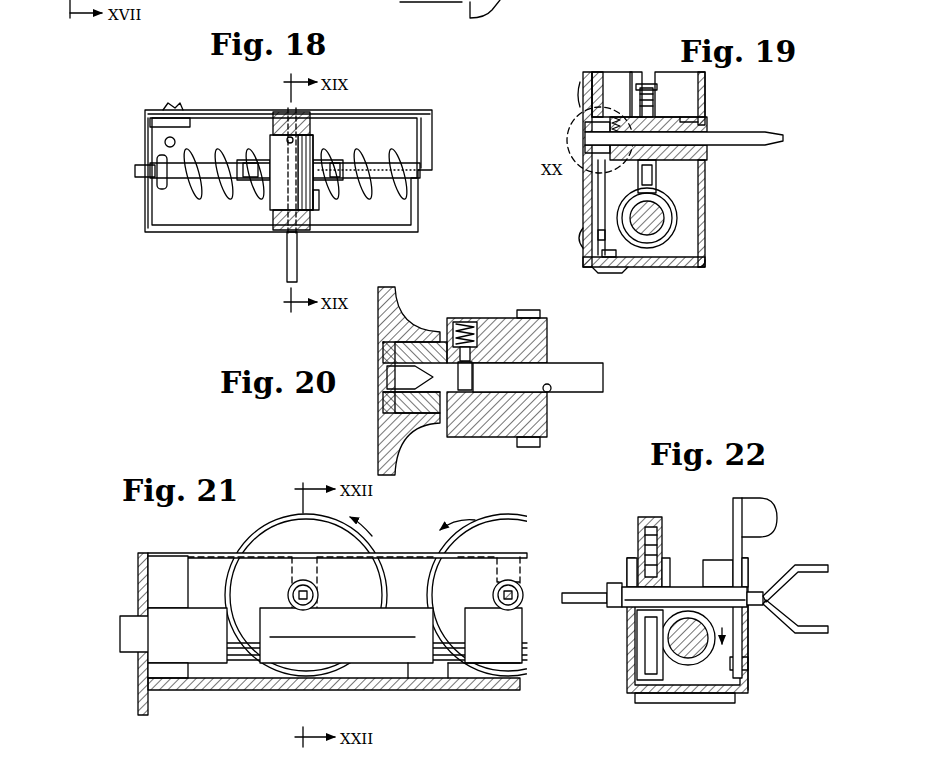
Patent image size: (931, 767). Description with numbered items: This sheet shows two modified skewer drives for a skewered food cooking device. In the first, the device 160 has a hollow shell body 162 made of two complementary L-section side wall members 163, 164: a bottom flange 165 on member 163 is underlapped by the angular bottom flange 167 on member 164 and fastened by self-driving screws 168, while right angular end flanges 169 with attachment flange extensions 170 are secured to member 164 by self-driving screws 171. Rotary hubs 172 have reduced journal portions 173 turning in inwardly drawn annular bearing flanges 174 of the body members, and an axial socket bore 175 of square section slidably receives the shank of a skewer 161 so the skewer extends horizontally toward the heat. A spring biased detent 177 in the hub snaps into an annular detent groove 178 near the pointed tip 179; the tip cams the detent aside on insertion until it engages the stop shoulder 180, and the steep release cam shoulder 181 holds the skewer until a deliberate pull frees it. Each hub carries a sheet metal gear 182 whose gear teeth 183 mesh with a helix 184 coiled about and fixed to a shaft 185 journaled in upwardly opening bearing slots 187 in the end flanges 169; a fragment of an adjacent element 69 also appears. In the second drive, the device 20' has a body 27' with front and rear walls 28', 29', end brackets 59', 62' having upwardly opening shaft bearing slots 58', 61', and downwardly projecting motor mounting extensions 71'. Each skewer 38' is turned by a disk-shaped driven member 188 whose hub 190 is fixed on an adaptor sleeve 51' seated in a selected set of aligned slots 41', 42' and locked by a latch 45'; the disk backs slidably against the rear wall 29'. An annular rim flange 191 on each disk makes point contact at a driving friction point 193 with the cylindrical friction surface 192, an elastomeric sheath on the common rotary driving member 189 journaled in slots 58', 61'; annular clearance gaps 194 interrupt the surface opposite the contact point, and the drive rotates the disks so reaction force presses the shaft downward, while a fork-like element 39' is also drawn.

In FIG. 18, the hopper 69 is at (450, 12).
In FIG. 18, the skewered food cooking device 160 is at (133, 121).
In FIG. 18, the skewer 161 is at (286, 258).
In FIG. 19, the skewer 161 is at (765, 133).
In FIG. 20, the skewer 161 is at (603, 373).
In FIG. 19, the shell body 162 is at (705, 264).
In FIG. 18, the side wall member 163 is at (366, 233).
In FIG. 19, the side wall member 163 is at (706, 200).
In FIG. 18, the side wall member 164 is at (231, 110).
In FIG. 19, the side wall member 164 is at (583, 196).
In FIG. 20, the side wall member 164 is at (380, 455).
In FIG. 19, the bottom flange 165 is at (660, 267).
In FIG. 18, the bottom flange 167 is at (432, 136).
In FIG. 19, the bottom flange 167 is at (622, 270).
In FIG. 18, the self-driving screws 168 is at (164, 139).
In FIG. 19, the self-driving screws 168 is at (610, 274).
In FIG. 18, the end flanges 169 is at (148, 206).
In FIG. 19, the end flanges 169 is at (698, 78).
In FIG. 18, the attachment flange extensions 170 is at (187, 118).
In FIG. 18, the self-driving screws 171 is at (170, 104).
In FIG. 19, the self-driving screws 171 is at (580, 240).
In FIG. 18, the rotary hub 172 is at (312, 140).
In FIG. 19, the rotary hub 172 is at (705, 177).
In FIG. 20, the rotary hub 172 is at (500, 318).
In FIG. 19, the journal portions 173 is at (585, 124).
In FIG. 20, the journal portions 173 is at (383, 352).
In FIG. 18, the bearing flanges 174 is at (276, 118).
In FIG. 19, the bearing flanges 174 is at (603, 90).
In FIG. 20, the bearing flanges 174 is at (418, 332).
In FIG. 19, the socket bore 175 is at (668, 160).
In FIG. 20, the socket bore 175 is at (551, 392).
In FIG. 19, the spring biased detent 177 is at (625, 160).
In FIG. 20, the spring biased detent 177 is at (478, 322).
In FIG. 20, the detent groove 178 is at (466, 400).
In FIG. 20, the pointed tip 179 is at (400, 377).
In FIG. 20, the stop shoulder 180 is at (478, 374).
In FIG. 20, the release cam shoulder 181 is at (390, 396).
In FIG. 18, the sheet metal gear 182 is at (320, 188).
In FIG. 19, the sheet metal gear 182 is at (650, 108).
In FIG. 18, the gear teeth 183 is at (335, 161).
In FIG. 19, the gear teeth 183 is at (640, 84).
In FIG. 18, the helix 184 is at (284, 184).
In FIG. 19, the helix 184 is at (668, 240).
In FIG. 18, the shaft 185 is at (421, 173).
In FIG. 19, the shaft 185 is at (662, 220).
In FIG. 18, the bearing slots 187 is at (135, 178).
In FIG. 19, the bearing slots 187 is at (648, 88).
In FIG. 21, the driven member 188 is at (272, 530).
In FIG. 22, the driven member 188 is at (637, 672).
In FIG. 21, the rotary driving member 189 is at (450, 678).
In FIG. 22, the rotary driving member 189 is at (748, 662).
In FIG. 21, the hub 190 is at (303, 580).
In FIG. 22, the hub 190 is at (657, 560).
In FIG. 21, the rim flange 191 is at (428, 580).
In FIG. 22, the rim flange 191 is at (652, 517).
In FIG. 21, the friction surface 192 is at (408, 678).
In FIG. 22, the friction surface 192 is at (688, 665).
In FIG. 21, the driving friction point 193 is at (372, 636).
In FIG. 21, the clearance gaps 194 is at (240, 665).
In FIG. 21, the device 20' is at (108, 529).
In FIG. 22, the device 20' is at (775, 710).
In FIG. 21, the body 27' is at (334, 700).
In FIG. 22, the front wall 28' is at (765, 645).
In FIG. 21, the rear wall 29' is at (337, 570).
In FIG. 22, the rear wall 29' is at (667, 625).
In FIG. 21, the skewer 38' is at (335, 619).
In FIG. 22, the skewer 38' is at (583, 584).
In FIG. 22, the fork 39' is at (795, 584).
In FIG. 22, the slots 41' is at (764, 568).
In FIG. 22, the slots 42' is at (615, 562).
In FIG. 22, the latch 45' is at (737, 588).
In FIG. 22, the adaptor sleeve 51' is at (685, 584).
In FIG. 21, the shaft bearing slot 58' is at (143, 582).
In FIG. 21, the end bracket 59' is at (143, 670).
In FIG. 22, the shaft bearing slot 61' is at (678, 560).
In FIG. 22, the end bracket 62' is at (716, 558).
In FIG. 21, the motor mounting extensions 71' is at (125, 635).
In FIG. 22, the motor mounting extensions 71' is at (670, 711).